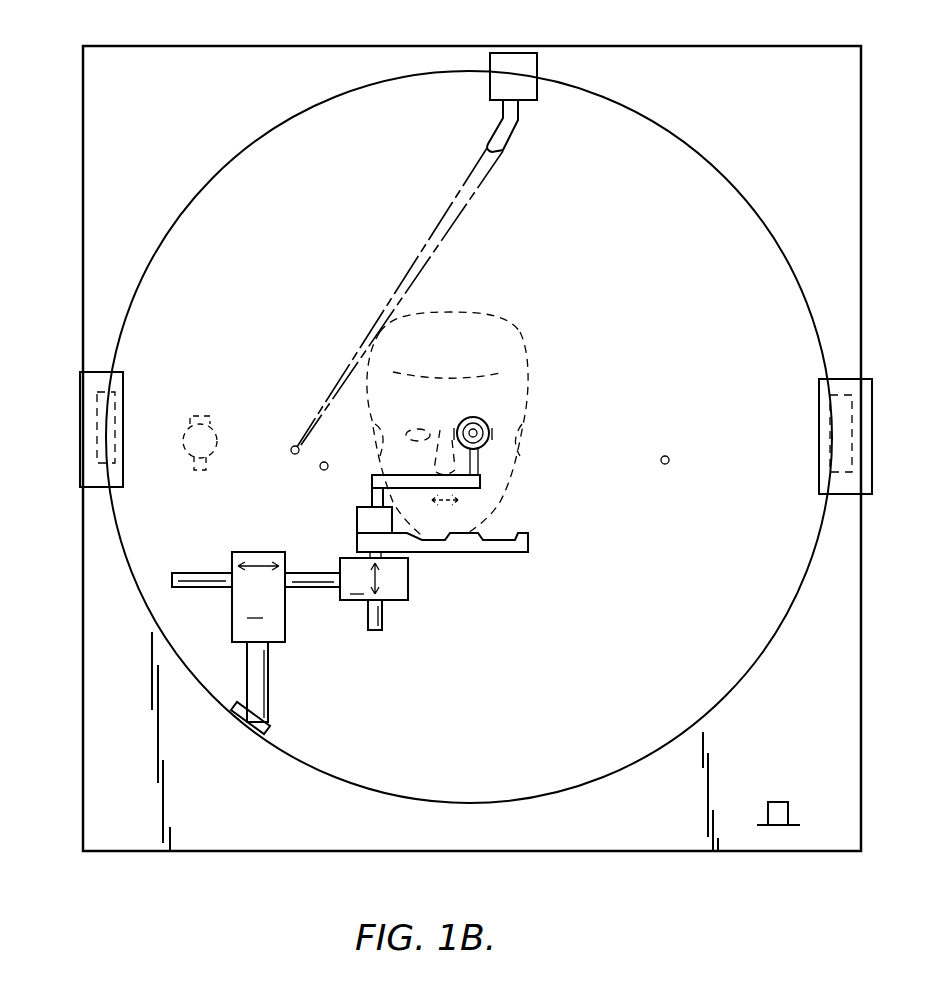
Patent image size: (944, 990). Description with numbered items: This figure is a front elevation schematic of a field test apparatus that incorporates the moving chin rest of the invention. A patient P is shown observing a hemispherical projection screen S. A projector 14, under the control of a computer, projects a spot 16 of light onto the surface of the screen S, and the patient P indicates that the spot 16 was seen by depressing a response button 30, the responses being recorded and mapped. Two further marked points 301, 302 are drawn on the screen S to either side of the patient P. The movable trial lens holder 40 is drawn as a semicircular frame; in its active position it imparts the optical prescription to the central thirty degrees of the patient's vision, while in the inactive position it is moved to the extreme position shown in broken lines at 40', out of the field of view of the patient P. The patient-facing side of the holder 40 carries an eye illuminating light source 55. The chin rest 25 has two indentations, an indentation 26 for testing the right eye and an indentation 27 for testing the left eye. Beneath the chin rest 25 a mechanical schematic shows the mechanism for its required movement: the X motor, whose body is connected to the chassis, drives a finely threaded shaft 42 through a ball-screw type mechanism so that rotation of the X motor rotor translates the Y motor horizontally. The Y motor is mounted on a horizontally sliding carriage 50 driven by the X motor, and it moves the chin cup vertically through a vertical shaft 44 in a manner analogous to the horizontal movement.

The projector 14 is at (515, 70).
The spot of light 16 is at (290, 450).
The reference point 301 is at (326, 462).
The reference point 302 is at (668, 456).
The trial lens holder 40 is at (522, 446).
The inactive position of trial lens holder 40' is at (218, 426).
The indentation 27 is at (452, 540).
The eye illuminating light source 55 is at (372, 478).
The chin rest 25 is at (495, 553).
The indentation 26 is at (503, 533).
The horizontally sliding carriage 50 is at (408, 588).
The vertical shaft 44 is at (380, 630).
The shaft 42 is at (183, 572).
The response button 30 is at (782, 802).
The patient P is at (522, 332).
The hemispherical projection screen S is at (671, 283).